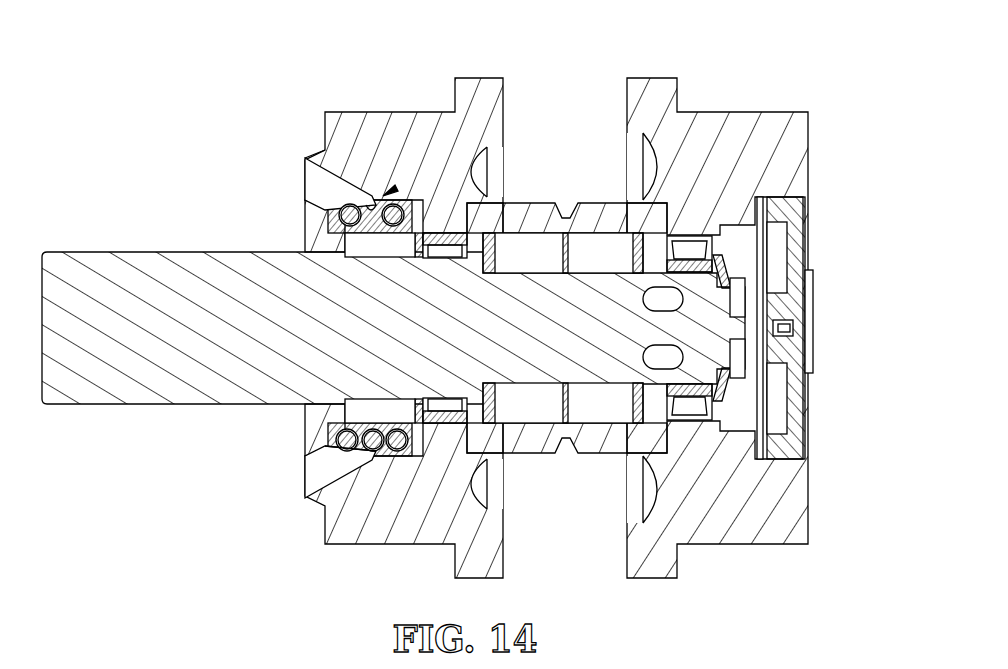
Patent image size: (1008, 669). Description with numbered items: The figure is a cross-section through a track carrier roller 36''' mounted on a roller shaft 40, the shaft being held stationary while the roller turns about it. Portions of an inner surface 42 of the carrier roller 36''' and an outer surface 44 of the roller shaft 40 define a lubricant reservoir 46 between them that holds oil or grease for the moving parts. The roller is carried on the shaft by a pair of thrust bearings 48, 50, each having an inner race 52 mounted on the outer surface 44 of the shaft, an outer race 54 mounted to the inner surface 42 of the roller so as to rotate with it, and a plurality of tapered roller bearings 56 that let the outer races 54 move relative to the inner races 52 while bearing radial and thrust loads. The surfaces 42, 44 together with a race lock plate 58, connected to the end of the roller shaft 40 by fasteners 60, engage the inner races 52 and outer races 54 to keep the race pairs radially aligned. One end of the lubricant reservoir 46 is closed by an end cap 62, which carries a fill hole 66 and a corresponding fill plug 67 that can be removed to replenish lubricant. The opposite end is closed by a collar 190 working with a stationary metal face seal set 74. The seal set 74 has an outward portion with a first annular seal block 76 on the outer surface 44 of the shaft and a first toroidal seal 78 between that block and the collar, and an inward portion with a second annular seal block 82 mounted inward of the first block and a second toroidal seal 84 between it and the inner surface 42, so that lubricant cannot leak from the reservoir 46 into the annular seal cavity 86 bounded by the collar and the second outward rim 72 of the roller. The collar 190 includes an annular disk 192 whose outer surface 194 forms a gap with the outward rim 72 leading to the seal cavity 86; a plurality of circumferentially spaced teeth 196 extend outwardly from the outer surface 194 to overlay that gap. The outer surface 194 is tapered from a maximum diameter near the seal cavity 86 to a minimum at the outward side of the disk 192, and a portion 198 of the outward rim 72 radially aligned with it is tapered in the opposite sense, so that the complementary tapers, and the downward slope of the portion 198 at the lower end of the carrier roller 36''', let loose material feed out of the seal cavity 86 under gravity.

The roller shaft 40 is at (150, 372).
The outer surface of the roller shaft 44 is at (583, 440).
The carrier roller 36''' is at (760, 328).
The inner surface of the carrier roller 42 is at (523, 450).
The tapered roller bearings 56 is at (503, 215).
The lubricant reservoir 46 is at (595, 252).
The outer race 54 is at (445, 233).
The thrust bearing 50 is at (693, 245).
The inner race 52 is at (712, 262).
The fasteners 60 is at (737, 292).
The race lock plate 58 is at (790, 380).
The end cap 62 is at (800, 192).
The fill hole 66 is at (812, 322).
The fill plug 67 is at (797, 312).
The annular disk 192 is at (310, 228).
The second outward rim 72 is at (345, 195).
The tapered portion of the outward rim 198 is at (372, 197).
The metal face seal set 74 is at (412, 210).
The annular seal cavity 86 is at (393, 182).
The teeth 196 is at (318, 200).
The first annular seal block 76 is at (305, 440).
The first toroidal seal 78 is at (320, 443).
The collar 190 is at (345, 248).
The outer surface of the collar 194 is at (320, 215).
The second annular seal block 82 is at (345, 378).
The second toroidal seal 84 is at (415, 420).
The thrust bearing 48 is at (445, 410).